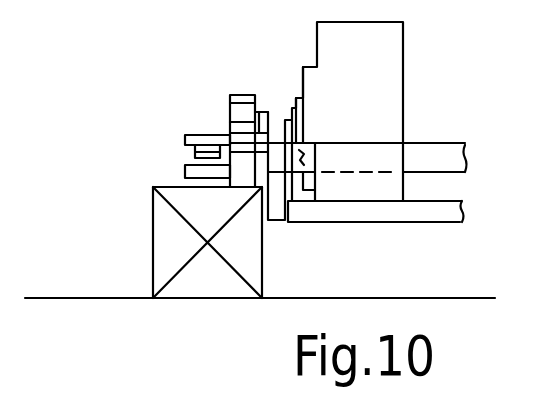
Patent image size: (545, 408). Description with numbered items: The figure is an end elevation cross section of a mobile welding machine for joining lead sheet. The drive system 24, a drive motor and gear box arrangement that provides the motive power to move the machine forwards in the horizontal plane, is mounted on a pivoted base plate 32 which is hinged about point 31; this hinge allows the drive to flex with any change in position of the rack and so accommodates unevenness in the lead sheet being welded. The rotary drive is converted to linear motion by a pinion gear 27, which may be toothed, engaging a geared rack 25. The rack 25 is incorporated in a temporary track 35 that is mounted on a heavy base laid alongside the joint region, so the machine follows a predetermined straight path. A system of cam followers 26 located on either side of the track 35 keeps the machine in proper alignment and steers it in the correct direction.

The drive system 24 is at (403, 75).
The geared rack 25 is at (240, 170).
The cam followers 26 is at (186, 170).
The pinion gear 27 is at (230, 102).
The hinge point 31 is at (278, 220).
The pivoted base plate 32 is at (445, 213).
The temporary track 35 is at (165, 255).